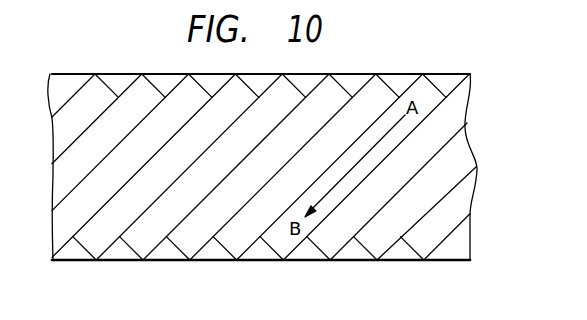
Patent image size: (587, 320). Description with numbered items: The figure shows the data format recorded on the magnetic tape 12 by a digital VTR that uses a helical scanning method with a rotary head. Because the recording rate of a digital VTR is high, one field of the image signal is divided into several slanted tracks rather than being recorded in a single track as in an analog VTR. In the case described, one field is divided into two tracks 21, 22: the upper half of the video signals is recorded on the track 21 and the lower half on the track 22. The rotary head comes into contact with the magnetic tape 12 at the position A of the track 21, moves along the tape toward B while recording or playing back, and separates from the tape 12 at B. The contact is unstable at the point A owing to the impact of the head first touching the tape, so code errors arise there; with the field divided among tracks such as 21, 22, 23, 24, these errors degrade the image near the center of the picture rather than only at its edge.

The magnetic tape 12 is at (441, 262).
The track 21 is at (259, 250).
The track 22 is at (214, 250).
The third layer 23 is at (167, 250).
The fourth layer 24 is at (124, 250).